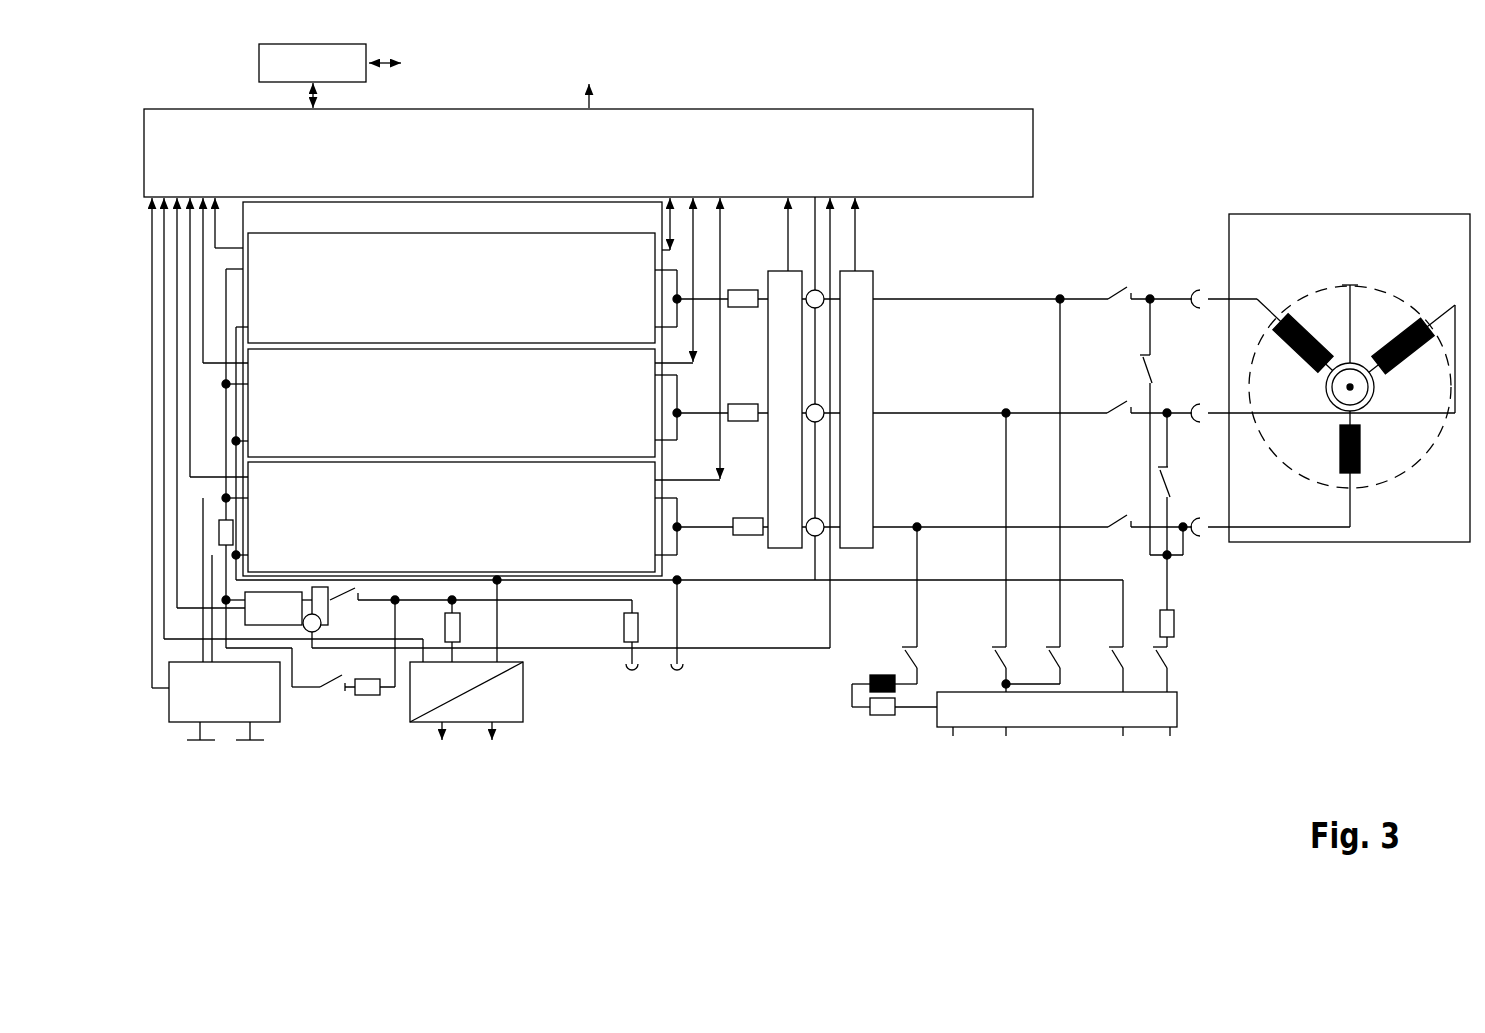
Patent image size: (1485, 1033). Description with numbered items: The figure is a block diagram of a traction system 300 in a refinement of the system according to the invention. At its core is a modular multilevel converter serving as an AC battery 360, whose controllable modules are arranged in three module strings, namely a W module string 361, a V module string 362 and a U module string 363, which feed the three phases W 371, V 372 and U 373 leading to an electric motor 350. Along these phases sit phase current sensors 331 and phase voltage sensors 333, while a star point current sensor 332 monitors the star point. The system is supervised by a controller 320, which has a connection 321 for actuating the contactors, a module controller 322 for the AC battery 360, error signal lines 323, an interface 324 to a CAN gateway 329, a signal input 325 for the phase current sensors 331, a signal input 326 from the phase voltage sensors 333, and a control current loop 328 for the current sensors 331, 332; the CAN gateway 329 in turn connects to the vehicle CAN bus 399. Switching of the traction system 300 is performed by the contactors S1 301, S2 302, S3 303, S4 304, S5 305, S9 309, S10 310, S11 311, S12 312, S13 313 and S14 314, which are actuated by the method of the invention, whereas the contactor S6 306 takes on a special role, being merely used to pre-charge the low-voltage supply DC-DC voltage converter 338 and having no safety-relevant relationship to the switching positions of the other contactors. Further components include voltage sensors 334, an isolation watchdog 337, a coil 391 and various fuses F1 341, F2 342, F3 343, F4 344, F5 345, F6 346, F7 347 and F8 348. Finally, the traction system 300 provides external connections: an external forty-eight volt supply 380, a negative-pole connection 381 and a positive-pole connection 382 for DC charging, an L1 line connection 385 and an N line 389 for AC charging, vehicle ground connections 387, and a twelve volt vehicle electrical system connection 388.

The traction system 300 is at (1308, 118).
The contactor S1 301 is at (1120, 306).
The contactor S2 302 is at (1117, 536).
The contactor S3 303 is at (1207, 404).
The contactor S4 304 is at (1176, 486).
The contactor S5 305 is at (925, 652).
The contactor S6 306 is at (330, 700).
The contactor S9 309 is at (1012, 652).
The contactor S10 310 is at (1065, 661).
The contactor S11 311 is at (1128, 662).
The contactor S12 312 is at (1178, 660).
The contactor S13 313 is at (352, 608).
The contactor S14 314 is at (1120, 420).
The controller 320 is at (975, 155).
The connection for actuating the contactors 321 is at (584, 112).
The module controller 322 is at (662, 192).
The error signal lines 323 is at (148, 192).
The interface to the CAN gateway 324 is at (311, 112).
The signal input 325 is at (786, 190).
The signal input from phase voltage sensors 326 is at (858, 190).
The control current loop 328 is at (852, 192).
The CAN gateway 329 is at (291, 78).
The phase current sensors 331 is at (799, 328).
The star point current sensor 332 is at (251, 623).
The phase voltage sensors 333 is at (871, 328).
The voltage sensors 334 is at (1035, 724).
The isolation watchdog 337 is at (202, 707).
The low-voltage supply DC-DC voltage converter 338 is at (471, 718).
The fuse F1 341 is at (748, 542).
The fuse F2 342 is at (746, 399).
The fuse F3 343 is at (736, 284).
The fuse F4 344 is at (1180, 622).
The fuse F5 345 is at (881, 720).
The fuse F6 346 is at (465, 623).
The fuse F7 347 is at (620, 627).
The fuse F8 348 is at (214, 531).
The electric motor 350 is at (1403, 260).
The modular multilevel converter as AC battery 360 is at (600, 232).
The W module string 361 is at (430, 303).
The V module string 362 is at (430, 418).
The U module string 363 is at (430, 532).
The phase W 371 is at (946, 298).
The phase V 372 is at (946, 412).
The phase U 373 is at (940, 526).
The external 48 V supply 380 is at (622, 676).
The connection DC charging, negative pole 381 is at (1121, 739).
The connection DC charging, positive pole 382 is at (1172, 739).
The L1 line connection 385 is at (951, 739).
The vehicle ground connections 387 is at (201, 750).
The 12 V vehicle electrical system connection 388 is at (497, 748).
The N line 389 is at (1008, 739).
The coil 391 is at (882, 671).
The vehicle CAN bus 399 is at (412, 63).